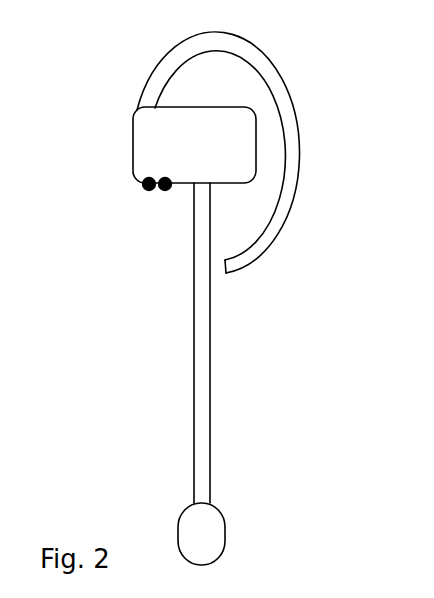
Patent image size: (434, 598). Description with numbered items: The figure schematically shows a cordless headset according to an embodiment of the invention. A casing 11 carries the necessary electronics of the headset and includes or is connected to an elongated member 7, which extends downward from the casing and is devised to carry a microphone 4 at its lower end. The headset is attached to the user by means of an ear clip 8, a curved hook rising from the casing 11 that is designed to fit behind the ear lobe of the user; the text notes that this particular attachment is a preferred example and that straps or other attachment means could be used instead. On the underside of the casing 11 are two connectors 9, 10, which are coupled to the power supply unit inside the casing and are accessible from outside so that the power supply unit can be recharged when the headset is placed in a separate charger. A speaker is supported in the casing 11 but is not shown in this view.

The microphone 4 is at (225, 528).
The elongated member 7 is at (210, 348).
The ear clip 8 is at (272, 58).
The connector 9 is at (150, 195).
The connector 10 is at (165, 195).
The casing 11 is at (133, 140).